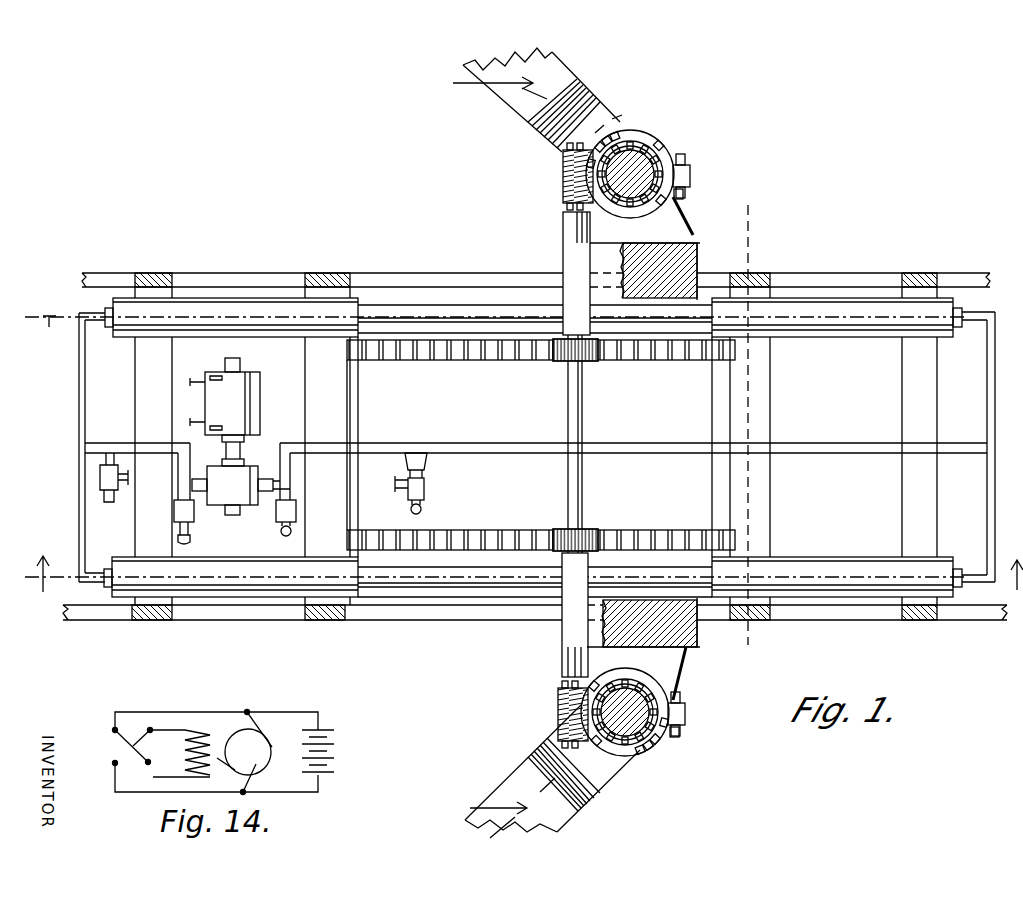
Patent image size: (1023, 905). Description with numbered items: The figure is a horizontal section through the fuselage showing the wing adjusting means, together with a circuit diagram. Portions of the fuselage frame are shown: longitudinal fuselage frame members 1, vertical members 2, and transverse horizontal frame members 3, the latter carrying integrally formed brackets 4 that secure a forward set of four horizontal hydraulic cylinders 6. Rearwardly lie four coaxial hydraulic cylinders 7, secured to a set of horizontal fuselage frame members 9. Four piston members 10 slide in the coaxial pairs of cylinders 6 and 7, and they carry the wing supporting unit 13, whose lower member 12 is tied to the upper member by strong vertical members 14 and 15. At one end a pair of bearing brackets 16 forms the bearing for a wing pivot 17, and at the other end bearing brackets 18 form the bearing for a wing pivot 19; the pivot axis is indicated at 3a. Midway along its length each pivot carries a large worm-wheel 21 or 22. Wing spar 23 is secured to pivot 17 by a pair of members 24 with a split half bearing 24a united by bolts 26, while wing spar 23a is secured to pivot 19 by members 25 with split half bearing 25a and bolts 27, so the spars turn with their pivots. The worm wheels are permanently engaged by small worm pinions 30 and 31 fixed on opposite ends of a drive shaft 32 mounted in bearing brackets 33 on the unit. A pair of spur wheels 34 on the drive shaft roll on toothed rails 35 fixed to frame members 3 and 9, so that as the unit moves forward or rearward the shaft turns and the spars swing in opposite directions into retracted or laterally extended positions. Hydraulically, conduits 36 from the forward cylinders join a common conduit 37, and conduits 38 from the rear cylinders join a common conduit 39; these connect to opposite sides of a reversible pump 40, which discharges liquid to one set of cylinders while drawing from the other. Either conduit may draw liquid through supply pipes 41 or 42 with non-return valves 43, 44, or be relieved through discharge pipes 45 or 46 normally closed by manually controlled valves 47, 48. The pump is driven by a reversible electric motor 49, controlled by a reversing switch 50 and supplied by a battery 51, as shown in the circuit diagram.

In FIG. 1, the longitudinal fuselage frame member 1 is at (255, 272).
In FIG. 1, the vertical fuselage frame member 2 is at (155, 272).
In FIG. 1, the horizontal frame member 3 is at (901, 408).
In FIG. 1, the roller shaft axis 3a is at (862, 320).
In FIG. 1, the bracket 4 is at (760, 209).
In FIG. 1, the hydraulic cylinder 6 is at (812, 334).
In FIG. 1, the hydraulic cylinder 7 is at (202, 330).
In FIG. 1, the horizontal fuselage frame member 9 is at (143, 389).
In FIG. 1, the piston member 10 is at (425, 303).
In FIG. 1, the lower member 12 is at (712, 385).
In FIG. 1, the wing supporting unit 13 is at (693, 240).
In FIG. 1, the vertical member 14 is at (695, 255).
In FIG. 1, the vertical member 15 is at (690, 633).
In FIG. 1, the bearing bracket 16 is at (681, 185).
In FIG. 1, the wing pivot 17 is at (627, 150).
In FIG. 1, the bearing bracket 18 is at (687, 712).
In FIG. 1, the wing pivot 19 is at (646, 690).
In FIG. 1, the worm-wheel 21 is at (598, 137).
In FIG. 1, the worm-wheel 22 is at (617, 755).
In FIG. 1, the wing spar 23 is at (511, 121).
In FIG. 1, the wing spar 23a is at (507, 784).
In FIG. 1, the member 24 is at (641, 134).
In FIG. 1, the split half bearing 24a is at (684, 206).
In FIG. 1, the member 25 is at (640, 768).
In FIG. 1, the split half bearing 25a is at (681, 722).
In FIG. 1, the bolt 26 is at (656, 142).
In FIG. 1, the bolt 27 is at (671, 741).
In FIG. 1, the worm pinion 30 is at (562, 185).
In FIG. 1, the worm pinion 31 is at (557, 710).
In FIG. 1, the drive shaft 32 is at (568, 414).
In FIG. 1, the bearing bracket 33 is at (563, 240).
In FIG. 1, the spur wheel 34 is at (553, 352).
In FIG. 1, the toothed rail 35 is at (422, 358).
In FIG. 1, the conduit 36 is at (987, 362).
In FIG. 1, the common conduit 37 is at (830, 454).
In FIG. 1, the conduit 38 is at (78, 402).
In FIG. 1, the common conduit 39 is at (101, 443).
In FIG. 1, the reversible pump 40 is at (243, 490).
In FIG. 1, the supply pipe 41 is at (292, 530).
In FIG. 1, the supply pipe 42 is at (186, 541).
In FIG. 1, the non-return valve 43 is at (298, 505).
In FIG. 1, the non-return valve 44 is at (176, 512).
In FIG. 1, the discharge pipe 45 is at (424, 497).
In FIG. 1, the discharge pipe 46 is at (105, 502).
In FIG. 1, the manually controlled valve 47 is at (395, 484).
In FIG. 1, the manually controlled valve 48 is at (130, 477).
In FIG. 1, the electric motor 49 is at (242, 388).
In FIG. 14, the electric motor 49 is at (260, 762).
In FIG. 14, the reversing switch 50 is at (117, 745).
In FIG. 14, the battery 51 is at (335, 775).